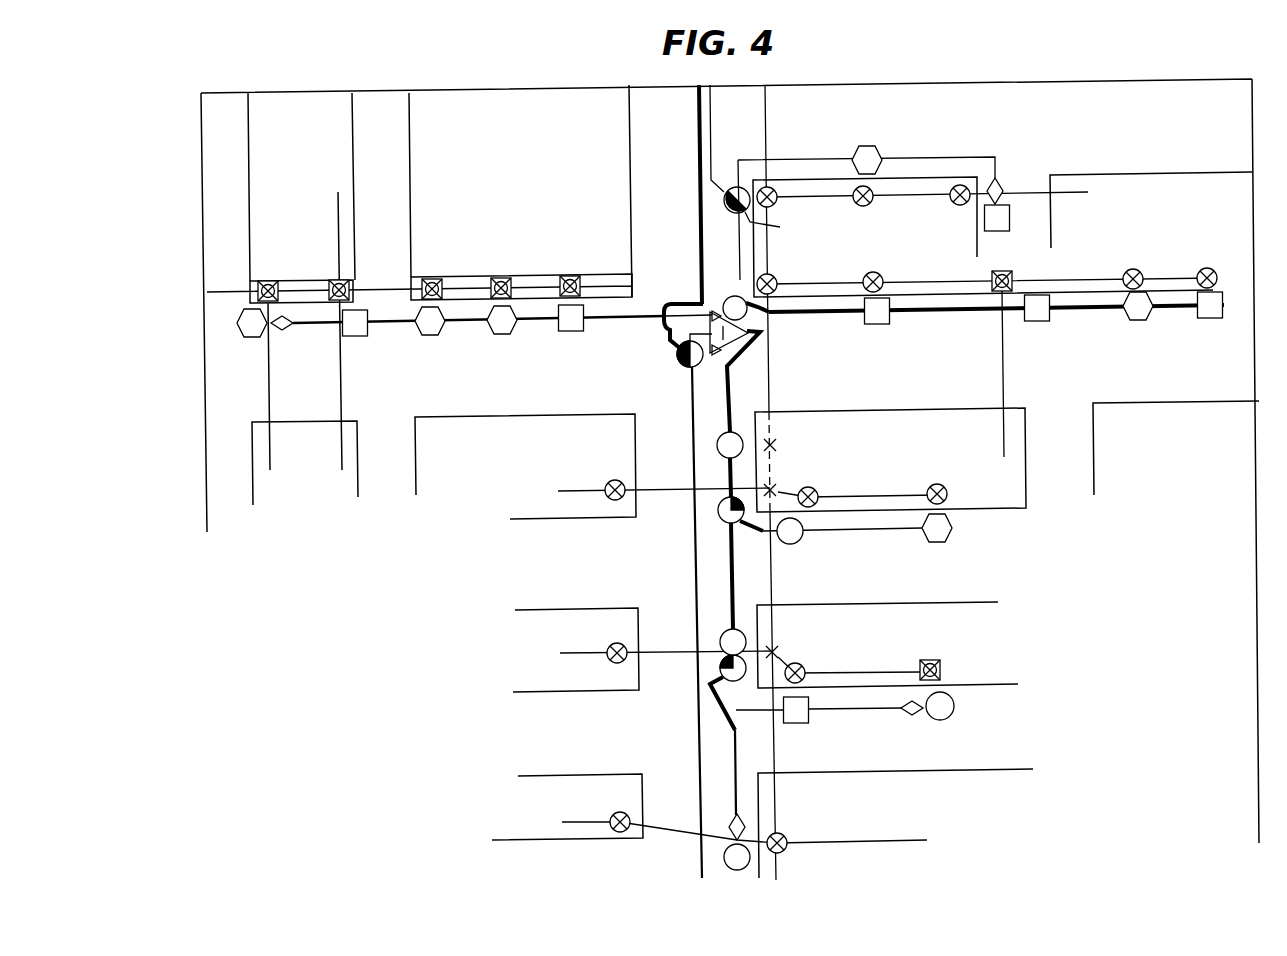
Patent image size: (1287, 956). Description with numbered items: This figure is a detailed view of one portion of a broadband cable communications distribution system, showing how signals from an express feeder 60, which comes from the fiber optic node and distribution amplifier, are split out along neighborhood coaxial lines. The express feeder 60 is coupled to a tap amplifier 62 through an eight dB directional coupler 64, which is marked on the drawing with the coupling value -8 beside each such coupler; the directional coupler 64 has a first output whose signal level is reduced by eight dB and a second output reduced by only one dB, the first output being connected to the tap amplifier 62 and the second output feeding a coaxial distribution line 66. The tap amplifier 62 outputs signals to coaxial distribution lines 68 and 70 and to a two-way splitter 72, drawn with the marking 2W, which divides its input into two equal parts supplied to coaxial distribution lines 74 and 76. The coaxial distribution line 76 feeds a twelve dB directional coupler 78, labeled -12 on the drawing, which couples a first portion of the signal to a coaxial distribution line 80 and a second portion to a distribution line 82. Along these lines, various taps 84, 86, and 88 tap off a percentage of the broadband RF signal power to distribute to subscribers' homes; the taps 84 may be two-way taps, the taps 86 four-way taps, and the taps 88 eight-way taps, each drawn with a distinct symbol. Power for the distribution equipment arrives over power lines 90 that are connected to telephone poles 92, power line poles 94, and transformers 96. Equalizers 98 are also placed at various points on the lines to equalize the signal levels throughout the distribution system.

The directional coupler 8 is at (675, 341).
The directional coupler 12 is at (779, 231).
The two-way splitter 2W is at (745, 318).
The express feeder 60 is at (694, 441).
The tap amplifier 62 is at (720, 358).
The directional coupler 64 is at (680, 362).
The coaxial distribution line 66 is at (700, 256).
The coaxial distribution line 68 is at (731, 398).
The coaxial distribution line 70 is at (612, 321).
The two-way splitter 72 is at (762, 329).
The coaxial distribution line 74 is at (929, 319).
The coaxial distribution line 76 is at (738, 259).
The directional coupler 78 is at (733, 188).
The coaxial distribution line 80 is at (712, 126).
The distribution line 82 is at (930, 155).
The two-way tap 84 is at (717, 452).
The four-way tap 86 is at (360, 340).
The eight-way tap 88 is at (254, 340).
The power line 90 is at (772, 375).
The telephone pole 92 is at (870, 206).
The power line pole 94 is at (788, 448).
The transformer 96 is at (1006, 267).
The equalizer 98 is at (286, 334).